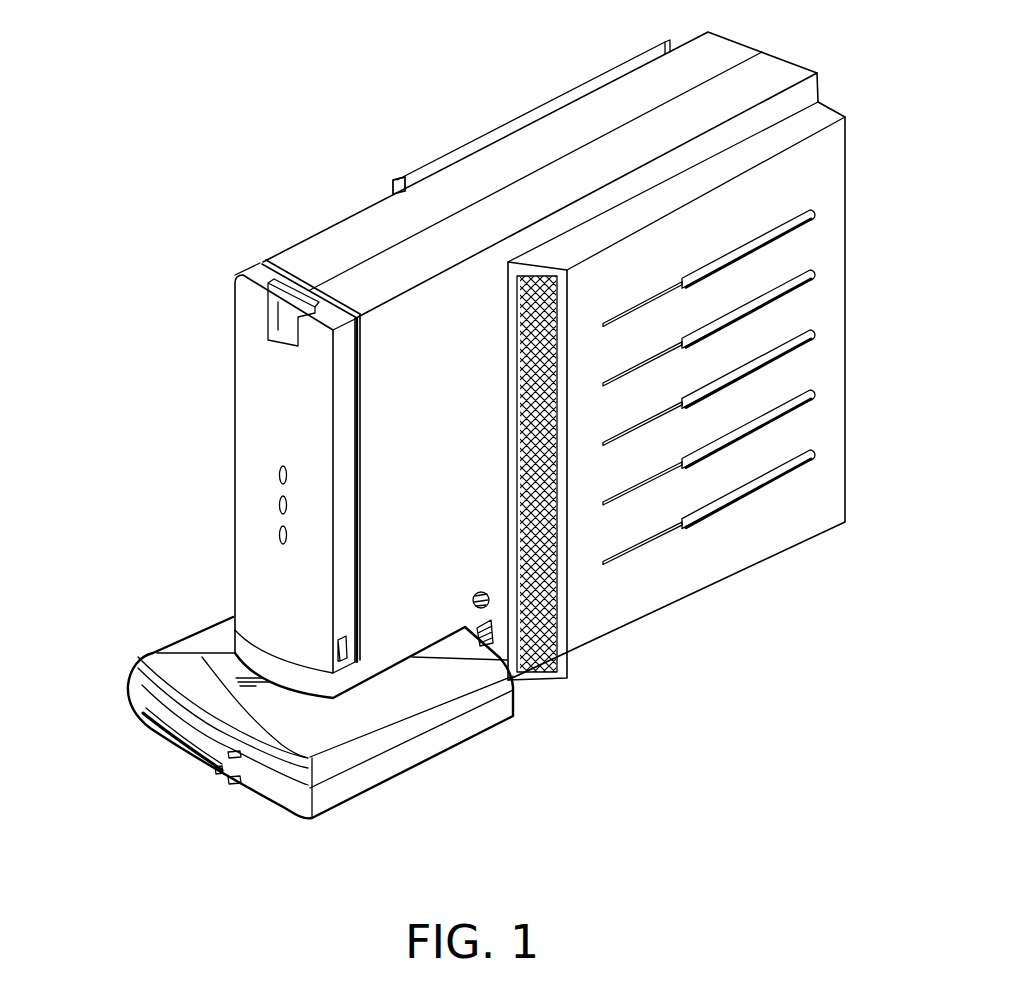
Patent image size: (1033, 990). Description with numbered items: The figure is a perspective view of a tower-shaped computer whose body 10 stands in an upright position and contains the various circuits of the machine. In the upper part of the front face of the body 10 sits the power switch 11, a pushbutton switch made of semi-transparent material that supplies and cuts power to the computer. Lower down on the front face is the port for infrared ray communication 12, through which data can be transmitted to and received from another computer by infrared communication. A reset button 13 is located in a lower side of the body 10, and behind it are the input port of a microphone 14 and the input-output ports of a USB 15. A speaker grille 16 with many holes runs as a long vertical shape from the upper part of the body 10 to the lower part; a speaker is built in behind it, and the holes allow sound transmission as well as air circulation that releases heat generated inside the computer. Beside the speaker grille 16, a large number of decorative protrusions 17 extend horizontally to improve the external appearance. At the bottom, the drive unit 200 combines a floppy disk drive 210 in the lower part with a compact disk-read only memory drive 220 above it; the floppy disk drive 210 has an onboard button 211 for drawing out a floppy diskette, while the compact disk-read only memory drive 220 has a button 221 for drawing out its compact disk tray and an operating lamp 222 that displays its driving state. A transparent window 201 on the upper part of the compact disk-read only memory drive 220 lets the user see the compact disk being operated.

The body 10 is at (533, 403).
The power switch 11 is at (268, 322).
The port for infrared ray communication 12 is at (235, 630).
The reset button 13 is at (347, 652).
The input port of a microphone 14 is at (492, 602).
The input-output ports of a USB 15 is at (492, 634).
The speaker grille 16 is at (399, 180).
The decorative protrusions 17 is at (817, 278).
The drive unit 200 is at (289, 731).
The transparent window 201 is at (212, 663).
The compact disk-read only memory drive 220 is at (188, 723).
The floppy disk drive 210 is at (178, 757).
The button 221 is at (218, 772).
The onboard button 211 is at (232, 783).
The operating lamp 222 is at (248, 760).